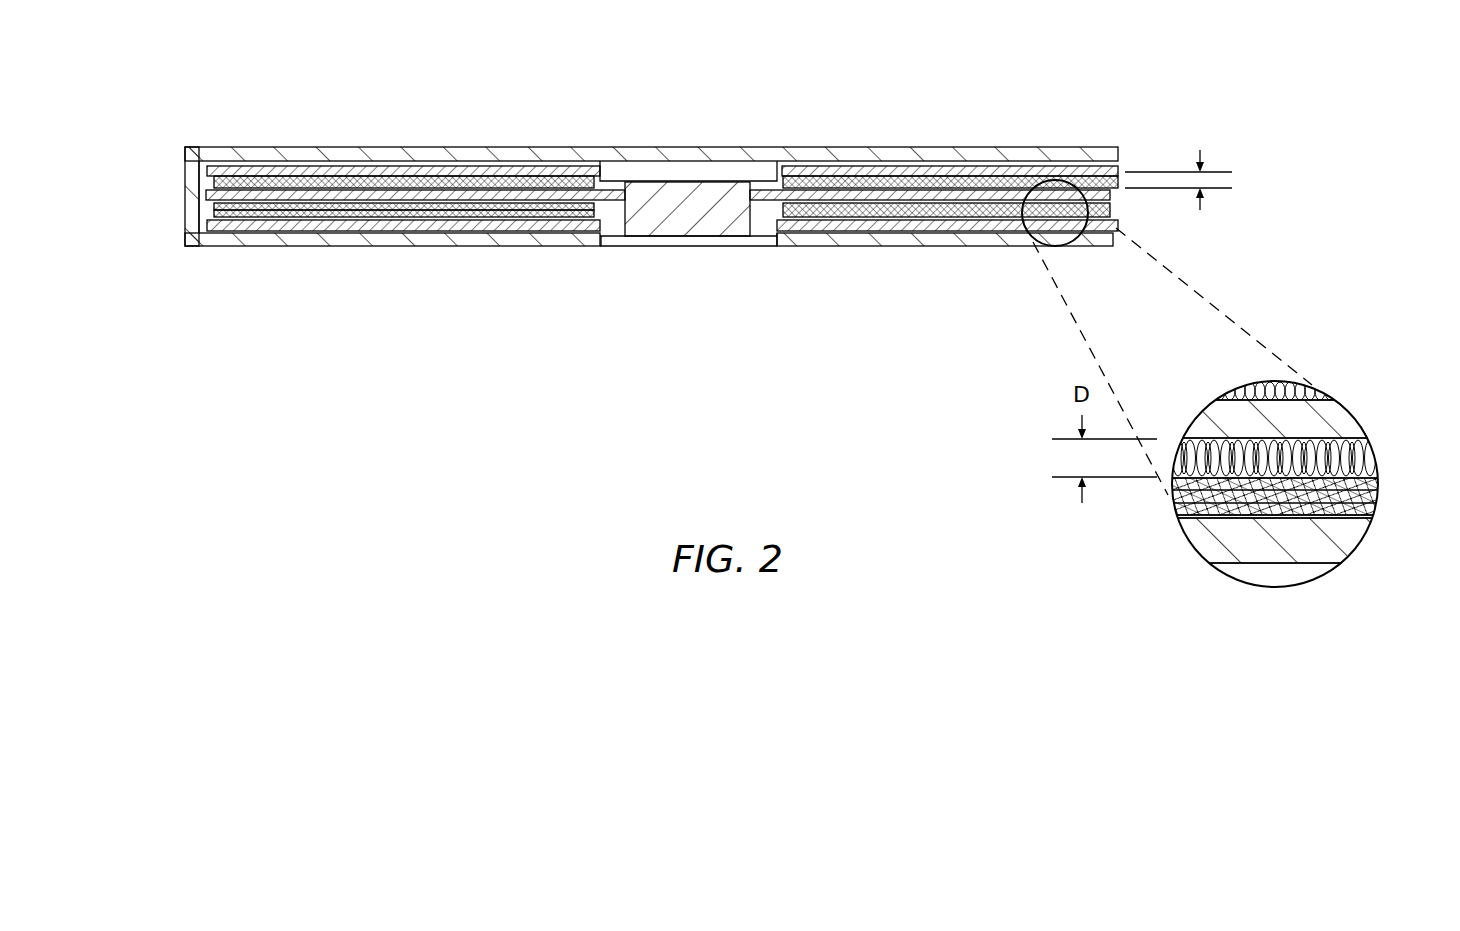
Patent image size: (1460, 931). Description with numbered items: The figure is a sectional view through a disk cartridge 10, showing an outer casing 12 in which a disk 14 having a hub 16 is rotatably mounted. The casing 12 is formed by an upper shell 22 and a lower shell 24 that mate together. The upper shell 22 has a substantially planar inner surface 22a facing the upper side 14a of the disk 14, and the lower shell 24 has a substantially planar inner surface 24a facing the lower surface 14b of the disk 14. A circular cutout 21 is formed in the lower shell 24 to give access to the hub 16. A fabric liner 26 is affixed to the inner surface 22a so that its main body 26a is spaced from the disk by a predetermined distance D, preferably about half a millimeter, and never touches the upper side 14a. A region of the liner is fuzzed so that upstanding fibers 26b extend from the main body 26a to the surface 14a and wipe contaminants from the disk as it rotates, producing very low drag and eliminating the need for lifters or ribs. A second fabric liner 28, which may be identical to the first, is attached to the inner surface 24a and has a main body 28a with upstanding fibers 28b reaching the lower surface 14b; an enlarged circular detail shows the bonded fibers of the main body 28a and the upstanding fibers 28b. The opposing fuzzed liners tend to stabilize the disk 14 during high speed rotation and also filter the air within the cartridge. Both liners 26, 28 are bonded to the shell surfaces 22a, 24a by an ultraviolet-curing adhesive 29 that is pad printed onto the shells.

The disk cartridge 10 is at (222, 104).
The outer casing 12 is at (184, 218).
The disk 14 is at (803, 233).
The upper side of the disk 14a is at (357, 193).
The lower surface of the disk 14b is at (860, 218).
The hub 16 is at (682, 190).
The circular cutout 21 is at (612, 242).
The upper shell 22 is at (455, 161).
The inner surface of the upper shell 22a is at (553, 164).
The lower shell 24 is at (925, 238).
The inner surface of the lower shell 24a is at (987, 240).
The fabric liner 26 is at (890, 165).
The main body of the liner 26a is at (1040, 163).
The upstanding fibers 26b is at (958, 165).
The second fabric liner 28 is at (297, 238).
The main body of the second liner 28a is at (433, 235).
The upstanding fibers of the second liner 28b is at (506, 215).
The adhesive 29 is at (1203, 517).